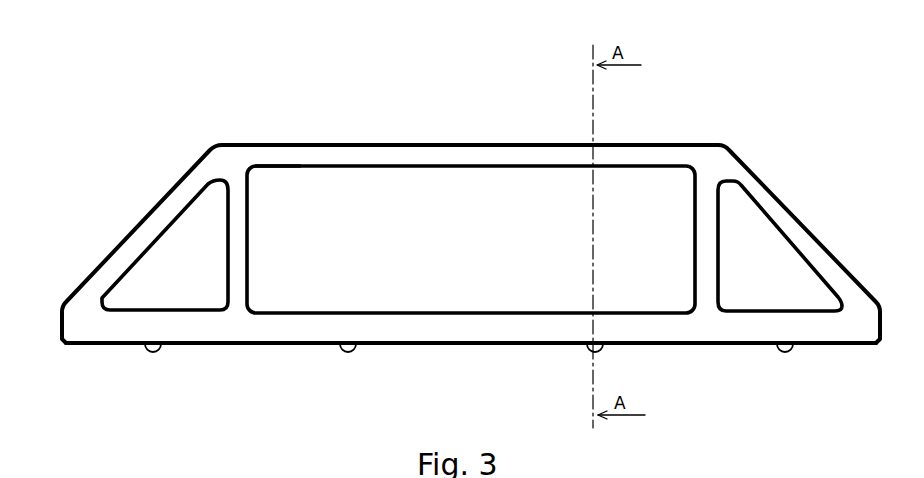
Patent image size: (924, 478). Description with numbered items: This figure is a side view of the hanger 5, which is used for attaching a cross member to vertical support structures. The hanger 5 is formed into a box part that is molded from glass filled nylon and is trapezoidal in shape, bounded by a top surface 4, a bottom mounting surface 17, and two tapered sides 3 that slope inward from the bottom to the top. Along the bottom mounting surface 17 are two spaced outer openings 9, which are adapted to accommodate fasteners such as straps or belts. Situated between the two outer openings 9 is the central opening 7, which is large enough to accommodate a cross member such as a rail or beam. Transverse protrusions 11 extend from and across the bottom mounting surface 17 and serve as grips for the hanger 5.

The tapered sides 3 is at (172, 198).
The top surface 4 is at (362, 148).
The hanger 5 is at (276, 152).
The central opening 7 is at (450, 225).
The outer openings 9 is at (170, 270).
The transverse protrusions 11 is at (155, 352).
The bottom mounting surface 17 is at (472, 350).